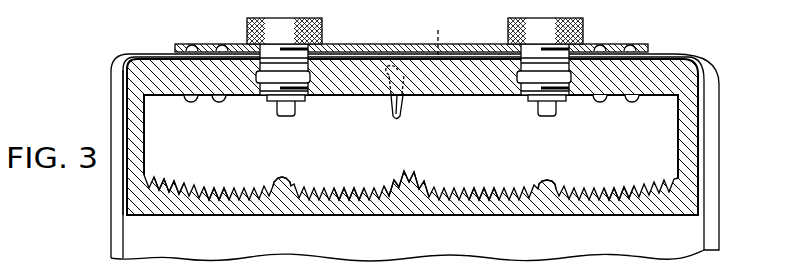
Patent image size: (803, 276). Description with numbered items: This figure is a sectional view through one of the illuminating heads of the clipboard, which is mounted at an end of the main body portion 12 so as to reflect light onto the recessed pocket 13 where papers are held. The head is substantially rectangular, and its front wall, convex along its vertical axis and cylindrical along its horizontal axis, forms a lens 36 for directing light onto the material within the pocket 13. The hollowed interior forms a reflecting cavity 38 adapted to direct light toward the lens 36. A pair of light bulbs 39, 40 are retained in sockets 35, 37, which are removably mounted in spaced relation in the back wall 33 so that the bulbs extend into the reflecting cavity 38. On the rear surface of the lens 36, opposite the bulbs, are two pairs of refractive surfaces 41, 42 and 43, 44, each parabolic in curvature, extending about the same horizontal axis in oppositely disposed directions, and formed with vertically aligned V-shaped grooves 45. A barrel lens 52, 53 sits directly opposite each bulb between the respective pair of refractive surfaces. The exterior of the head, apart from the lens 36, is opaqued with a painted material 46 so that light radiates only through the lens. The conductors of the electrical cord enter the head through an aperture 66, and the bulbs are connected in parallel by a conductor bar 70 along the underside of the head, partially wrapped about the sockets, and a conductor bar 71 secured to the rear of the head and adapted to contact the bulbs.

The main body portion 12 is at (720, 217).
The recessed pocket 13 is at (688, 240).
The back wall 33 is at (658, 72).
The socket 35 is at (247, 24).
The lens 36 is at (245, 216).
The socket 37 is at (509, 27).
The reflecting cavity 38 is at (167, 108).
The light bulb 39 is at (277, 106).
The light bulb 40 is at (536, 106).
The refractive surface 41 is at (219, 170).
The refractive surface 42 is at (349, 170).
The refractive surface 43 is at (485, 170).
The refractive surface 44 is at (621, 174).
The V-shaped grooves 45 is at (176, 180).
The painted material 46 is at (700, 68).
The barrel lens 52 is at (282, 177).
The barrel lens 53 is at (554, 178).
The aperture 66 is at (388, 117).
The conductor bar 70 is at (440, 30).
The conductor bar 71 is at (344, 47).